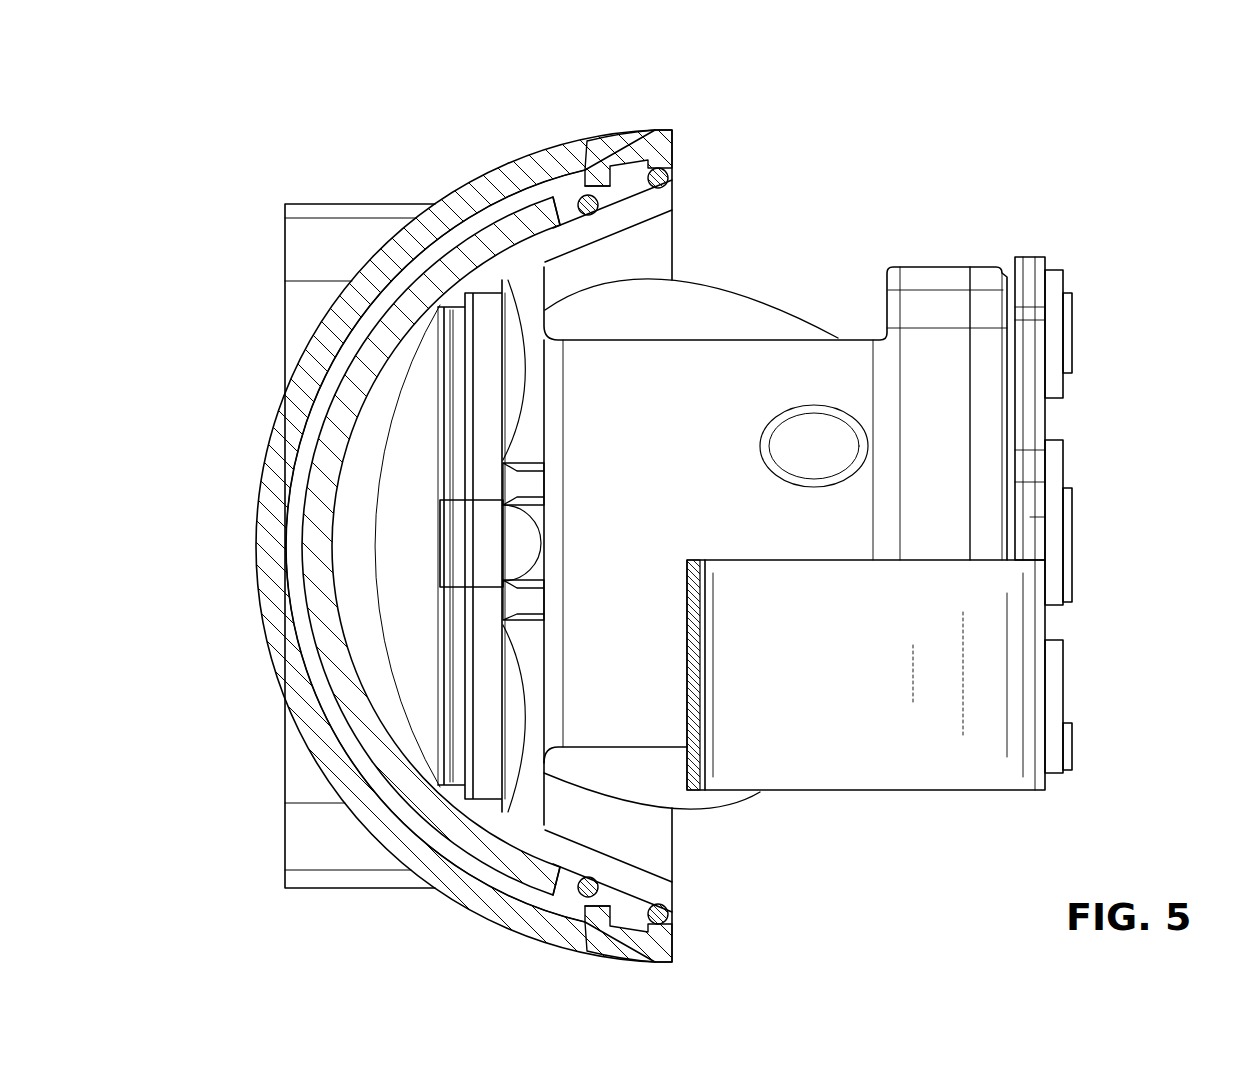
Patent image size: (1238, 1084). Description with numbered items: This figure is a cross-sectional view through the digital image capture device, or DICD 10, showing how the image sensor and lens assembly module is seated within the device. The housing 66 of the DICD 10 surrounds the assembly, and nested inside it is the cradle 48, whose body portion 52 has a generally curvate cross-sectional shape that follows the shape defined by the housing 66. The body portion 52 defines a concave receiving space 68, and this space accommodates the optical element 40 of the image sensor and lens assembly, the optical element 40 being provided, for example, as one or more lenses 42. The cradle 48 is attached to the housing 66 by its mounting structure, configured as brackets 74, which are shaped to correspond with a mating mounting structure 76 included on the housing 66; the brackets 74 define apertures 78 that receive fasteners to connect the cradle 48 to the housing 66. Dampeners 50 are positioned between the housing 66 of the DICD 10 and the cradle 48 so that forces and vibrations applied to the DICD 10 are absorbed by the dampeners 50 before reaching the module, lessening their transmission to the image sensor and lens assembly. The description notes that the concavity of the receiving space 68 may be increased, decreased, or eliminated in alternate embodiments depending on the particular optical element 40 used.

The DICD 10 is at (628, 126).
The optical element 40 is at (432, 628).
The lenses 42 is at (455, 540).
The cradle 48 is at (348, 352).
The dampeners 50 is at (672, 176).
The body portion 52 is at (325, 425).
The housing 66 is at (498, 166).
The concave receiving space 68 is at (395, 700).
The brackets 74 is at (635, 207).
The mounting structure 76 is at (598, 182).
The apertures 78 is at (655, 207).